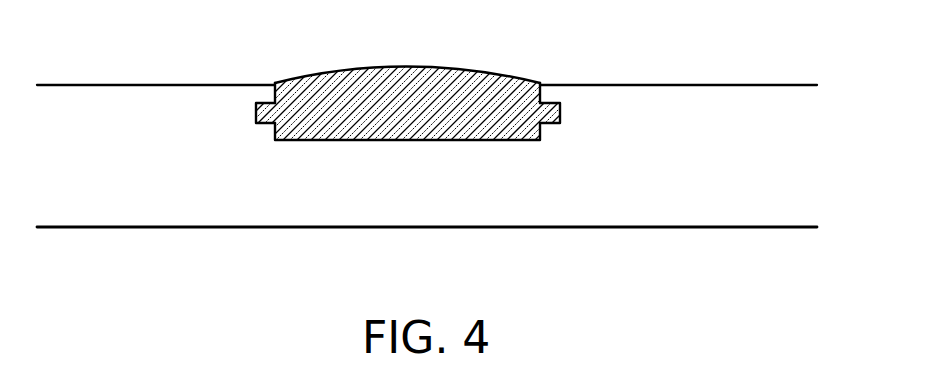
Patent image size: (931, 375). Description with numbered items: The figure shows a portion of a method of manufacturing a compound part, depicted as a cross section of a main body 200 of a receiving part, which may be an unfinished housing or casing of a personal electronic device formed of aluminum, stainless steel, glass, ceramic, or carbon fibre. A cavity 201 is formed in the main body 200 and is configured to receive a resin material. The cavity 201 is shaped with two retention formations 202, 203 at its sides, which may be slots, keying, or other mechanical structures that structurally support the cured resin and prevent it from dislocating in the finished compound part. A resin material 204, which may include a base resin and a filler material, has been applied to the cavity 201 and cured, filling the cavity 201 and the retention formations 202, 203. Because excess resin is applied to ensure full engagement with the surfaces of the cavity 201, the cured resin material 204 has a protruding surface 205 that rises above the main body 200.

The main body 200 is at (770, 85).
The cavity 201 is at (369, 166).
The retention formation 202 is at (260, 124).
The retention formation 203 is at (552, 123).
The resin material 204 is at (427, 128).
The protruding surface 205 is at (449, 54).